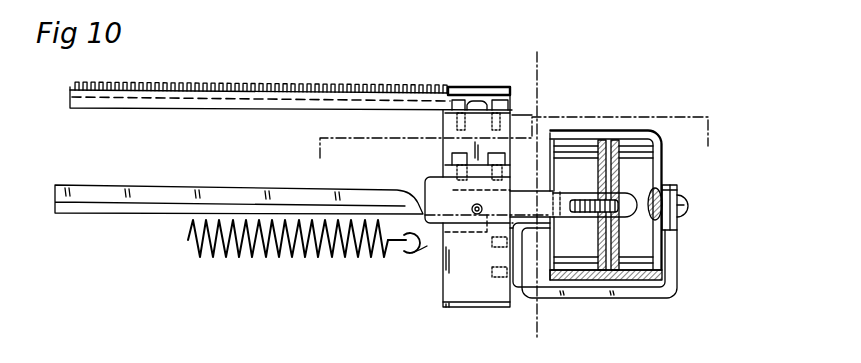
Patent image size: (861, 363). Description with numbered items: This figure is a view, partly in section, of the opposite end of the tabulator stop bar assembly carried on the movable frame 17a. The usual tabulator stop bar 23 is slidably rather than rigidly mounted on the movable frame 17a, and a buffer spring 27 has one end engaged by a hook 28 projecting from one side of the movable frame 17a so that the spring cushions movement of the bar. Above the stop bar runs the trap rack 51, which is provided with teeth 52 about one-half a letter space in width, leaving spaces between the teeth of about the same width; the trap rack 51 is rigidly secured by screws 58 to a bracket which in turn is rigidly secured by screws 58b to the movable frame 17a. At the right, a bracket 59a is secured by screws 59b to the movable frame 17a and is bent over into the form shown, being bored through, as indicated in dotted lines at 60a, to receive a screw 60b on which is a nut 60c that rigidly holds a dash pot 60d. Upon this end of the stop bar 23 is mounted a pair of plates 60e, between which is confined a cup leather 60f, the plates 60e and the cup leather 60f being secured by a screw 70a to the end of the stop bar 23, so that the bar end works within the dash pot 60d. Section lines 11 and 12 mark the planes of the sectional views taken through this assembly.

The connection of bell cranks to plungers 11 is at (517, 150).
The section line 12- 12 is at (537, 52).
The movable frame 17a is at (468, 278).
The tabulator stop bar 23 is at (230, 203).
The buffer spring 27 is at (283, 257).
The hook 28 is at (408, 255).
The trap rack 51 is at (262, 108).
The teeth 52 is at (343, 85).
The screws 58 is at (510, 101).
The screws 58b is at (450, 158).
The bracket 59a is at (668, 280).
The screws 59b is at (490, 278).
The bore 60a is at (678, 190).
The screw 60b is at (687, 204).
The nut 60c is at (652, 190).
The dash pot 60d is at (640, 135).
The plates 60e is at (602, 230).
The cup leather 60f is at (607, 248).
The screw 70a is at (578, 213).